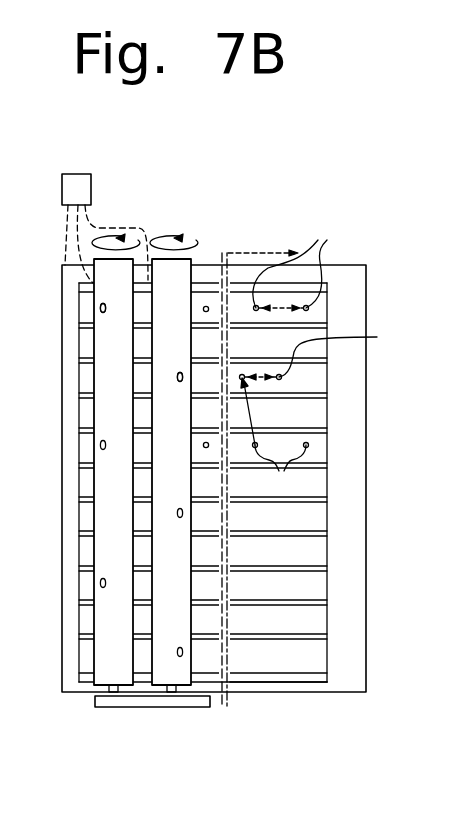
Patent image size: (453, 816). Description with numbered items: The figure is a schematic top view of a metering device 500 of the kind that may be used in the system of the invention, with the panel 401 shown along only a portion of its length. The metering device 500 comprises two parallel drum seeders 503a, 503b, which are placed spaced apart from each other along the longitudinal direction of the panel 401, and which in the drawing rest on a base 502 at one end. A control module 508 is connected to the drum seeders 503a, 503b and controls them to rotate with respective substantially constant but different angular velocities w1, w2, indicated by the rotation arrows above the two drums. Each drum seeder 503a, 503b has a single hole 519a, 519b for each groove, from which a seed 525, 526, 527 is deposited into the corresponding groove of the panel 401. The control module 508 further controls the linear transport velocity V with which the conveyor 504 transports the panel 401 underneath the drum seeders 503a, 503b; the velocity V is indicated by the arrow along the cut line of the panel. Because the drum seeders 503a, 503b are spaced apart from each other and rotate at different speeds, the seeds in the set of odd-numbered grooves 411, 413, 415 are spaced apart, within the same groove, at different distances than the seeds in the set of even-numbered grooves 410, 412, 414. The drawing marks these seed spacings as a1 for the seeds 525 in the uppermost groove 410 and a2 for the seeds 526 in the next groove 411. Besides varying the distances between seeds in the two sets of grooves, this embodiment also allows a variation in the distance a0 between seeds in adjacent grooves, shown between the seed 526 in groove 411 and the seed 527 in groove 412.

The metering device 500 is at (241, 422).
The control module 508 is at (77, 183).
The hole 519a is at (102, 308).
The hole 519b is at (178, 377).
The drum seeder 503a is at (107, 547).
The drum seeder 503b is at (168, 482).
The base plate 502 is at (182, 706).
The conveyor 504 is at (288, 686).
The even-numbered groove 410 is at (318, 316).
The odd-numbered groove 411 is at (315, 378).
The even-numbered groove 412 is at (317, 453).
The odd-numbered groove 413 is at (315, 513).
The even-numbered groove 414 is at (312, 588).
The groove 415 is at (310, 663).
The panel 401 is at (313, 628).
The seed 525 is at (299, 264).
The seed 526 is at (329, 354).
The seed 527 is at (281, 470).
The angular velocity w1 is at (138, 240).
The angular velocity w2 is at (196, 240).
The linear transport velocity V is at (263, 244).
The distance between seeds in adjacent grooves a0 is at (258, 411).
The distance a1 is at (282, 309).
The distance a2 is at (259, 374).